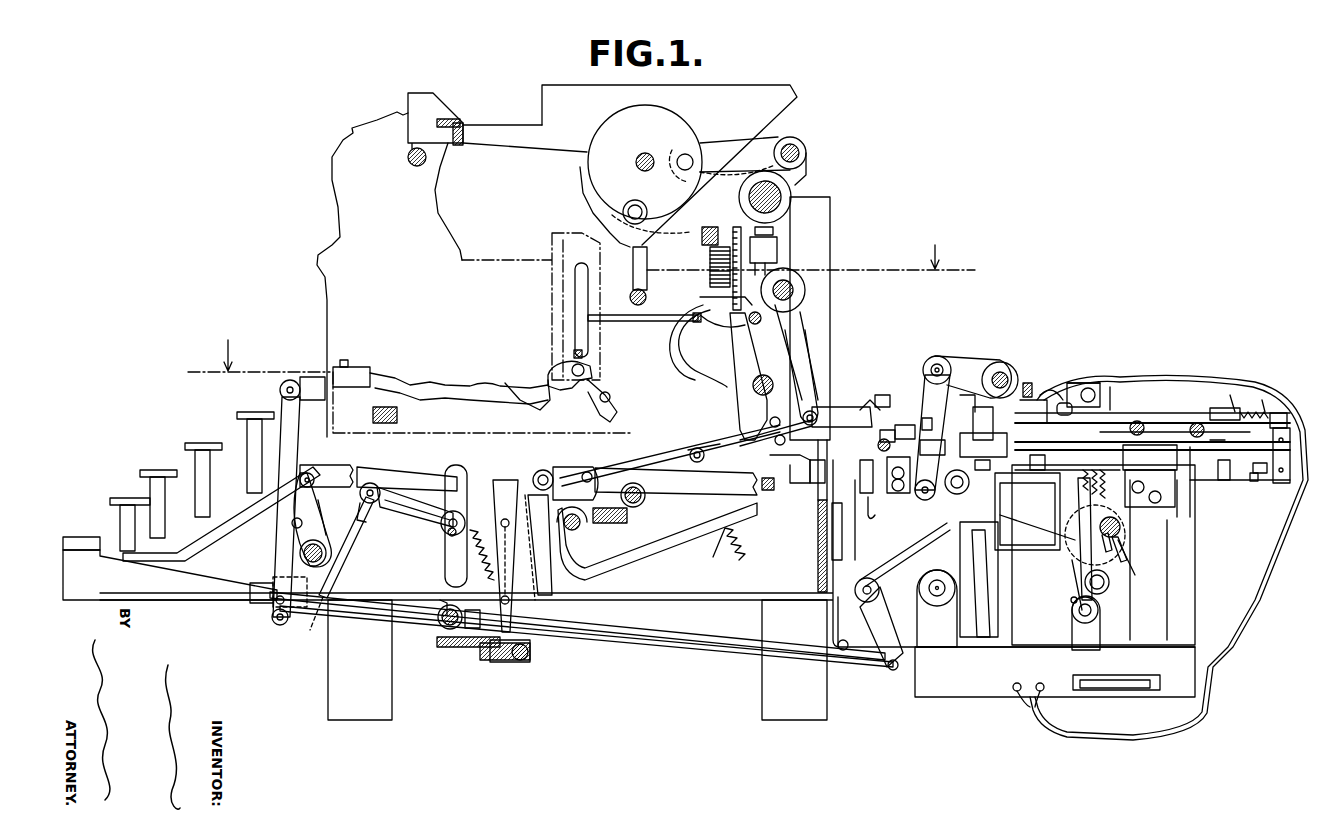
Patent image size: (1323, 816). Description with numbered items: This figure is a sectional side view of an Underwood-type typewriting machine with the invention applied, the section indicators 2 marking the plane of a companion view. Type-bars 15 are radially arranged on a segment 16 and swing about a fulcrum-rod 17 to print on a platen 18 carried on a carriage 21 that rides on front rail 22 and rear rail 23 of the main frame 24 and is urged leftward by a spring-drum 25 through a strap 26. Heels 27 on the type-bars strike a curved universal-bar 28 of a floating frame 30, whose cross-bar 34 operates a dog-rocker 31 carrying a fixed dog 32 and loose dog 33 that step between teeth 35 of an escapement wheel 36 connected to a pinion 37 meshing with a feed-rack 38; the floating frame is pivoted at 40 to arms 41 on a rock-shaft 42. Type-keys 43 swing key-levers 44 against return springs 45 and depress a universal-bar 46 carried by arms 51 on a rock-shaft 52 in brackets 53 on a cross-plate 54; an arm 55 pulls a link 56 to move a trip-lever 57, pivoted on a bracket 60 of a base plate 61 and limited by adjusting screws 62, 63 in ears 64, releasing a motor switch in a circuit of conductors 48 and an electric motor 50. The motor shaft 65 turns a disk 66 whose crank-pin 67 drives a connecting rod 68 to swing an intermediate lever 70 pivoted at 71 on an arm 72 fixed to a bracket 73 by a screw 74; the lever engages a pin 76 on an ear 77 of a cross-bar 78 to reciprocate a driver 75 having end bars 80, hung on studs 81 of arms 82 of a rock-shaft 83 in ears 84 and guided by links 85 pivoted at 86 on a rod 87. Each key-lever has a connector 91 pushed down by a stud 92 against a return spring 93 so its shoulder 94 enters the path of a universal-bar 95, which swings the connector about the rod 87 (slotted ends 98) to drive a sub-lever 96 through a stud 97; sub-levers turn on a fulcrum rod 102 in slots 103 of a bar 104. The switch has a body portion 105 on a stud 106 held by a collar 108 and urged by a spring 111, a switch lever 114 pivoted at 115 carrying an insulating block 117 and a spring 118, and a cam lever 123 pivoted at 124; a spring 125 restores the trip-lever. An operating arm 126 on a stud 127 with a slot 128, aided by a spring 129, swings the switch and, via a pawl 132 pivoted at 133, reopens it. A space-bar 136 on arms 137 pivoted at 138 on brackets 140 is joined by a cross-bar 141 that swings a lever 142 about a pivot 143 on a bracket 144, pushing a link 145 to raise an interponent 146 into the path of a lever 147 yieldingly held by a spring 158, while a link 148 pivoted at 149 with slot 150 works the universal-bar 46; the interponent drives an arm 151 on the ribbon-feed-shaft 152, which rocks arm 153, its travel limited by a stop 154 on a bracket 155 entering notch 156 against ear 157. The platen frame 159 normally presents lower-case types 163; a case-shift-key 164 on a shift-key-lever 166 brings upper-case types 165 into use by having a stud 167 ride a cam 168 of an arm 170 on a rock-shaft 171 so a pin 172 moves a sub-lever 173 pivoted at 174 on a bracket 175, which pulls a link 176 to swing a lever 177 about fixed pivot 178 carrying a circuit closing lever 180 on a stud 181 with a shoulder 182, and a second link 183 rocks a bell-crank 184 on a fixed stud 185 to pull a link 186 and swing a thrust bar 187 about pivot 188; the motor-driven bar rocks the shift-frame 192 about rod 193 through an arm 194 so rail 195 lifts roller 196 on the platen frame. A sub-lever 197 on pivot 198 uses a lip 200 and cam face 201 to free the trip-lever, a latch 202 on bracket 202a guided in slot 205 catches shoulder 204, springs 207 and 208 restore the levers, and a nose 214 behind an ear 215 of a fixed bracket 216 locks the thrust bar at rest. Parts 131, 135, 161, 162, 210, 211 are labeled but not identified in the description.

The section line 2 is at (581, 308).
The type-bars 15 is at (410, 384).
The segment 16 is at (552, 298).
The fulcrum-rod 17 is at (590, 370).
The platen 18 is at (612, 115).
The carriage 21 is at (515, 125).
The front rail 22 is at (408, 160).
The rear rail 23 is at (760, 182).
The main frame 24 is at (325, 186).
The spring-drum 25 is at (778, 253).
The strap 26 is at (773, 231).
The heels 27 is at (545, 372).
The curved universal-bar 28 is at (583, 353).
The floating frame 30 is at (650, 322).
The dog-rocker 31 is at (732, 370).
The fixed dog 32 is at (720, 303).
The loose dog 33 is at (706, 326).
The cross-bar 34 is at (693, 314).
The teeth 35 is at (743, 262).
The escapement wheel 36 is at (737, 227).
The pinion 37 is at (710, 264).
The feed-rack 38 is at (708, 227).
The pivotal connection 40 is at (756, 324).
The arms 41 is at (800, 340).
The rock-shaft 42 is at (752, 388).
The type-keys 43 is at (240, 412).
The key-levers 44 is at (385, 470).
The return springs 45 is at (718, 548).
The universal-bar 46 is at (372, 486).
The conductors 48 is at (1095, 383).
The electric motor 50 is at (1200, 553).
The arms 51 is at (412, 512).
The rock-shaft 52 is at (441, 528).
The brackets 53 is at (454, 537).
The cross-bar or plate 54 is at (480, 652).
The arm 55 is at (445, 492).
The link 56 is at (468, 470).
The trip-lever 57 is at (1150, 476).
The bracket 60 is at (1167, 600).
The base plate 61 is at (1012, 652).
The adjusting screw 62 is at (1192, 482).
The adjusting screw 63 is at (1097, 484).
The ears 64 is at (1178, 560).
The shaft 65 is at (1080, 560).
The disk 66 is at (1109, 552).
The crank-pin 67 is at (1126, 552).
The connecting rod 68 is at (979, 579).
The intermediate lever 70 is at (940, 431).
The pivot 71 is at (937, 356).
The arm 72 is at (962, 365).
The bracket 73 is at (1078, 383).
The screw 74 is at (1000, 362).
The actuating frame or driver 75 is at (860, 520).
The pin 76 is at (898, 493).
The ear 77 is at (939, 446).
The cross-bar 78 is at (896, 447).
The end bars 80 is at (676, 481).
The studs 81 is at (966, 484).
The arms 82 is at (977, 583).
The rock-shaft 83 is at (936, 598).
The ears 84 is at (957, 600).
The links 85 is at (542, 578).
The pivotal connection 86 is at (544, 474).
The rod 87 is at (530, 655).
The connector or interponent 91 is at (494, 498).
The stud 92 is at (505, 528).
The return spring 93 is at (483, 555).
The shoulder 94 is at (533, 476).
The universal-bar or cross-bar 95 is at (531, 500).
The sub-lever 96 is at (590, 458).
The projection or stud 97 is at (594, 480).
The slot 98 is at (518, 662).
The fulcrum rod 102 is at (572, 532).
The slots 103 is at (592, 535).
The bar 104 is at (627, 517).
The body portion 105 is at (1274, 460).
The stud 106 is at (1282, 413).
The collar 108 is at (1257, 402).
The spring 111 is at (1210, 412).
The switch lever 114 is at (1226, 480).
The pivot 115 is at (1221, 429).
The insulating block 117 is at (1068, 404).
The spring 118 is at (1038, 465).
The cam lever 123 is at (1285, 483).
The pivot 124 is at (1083, 480).
The spring 125 is at (1254, 481).
The operating arm 126 is at (1103, 590).
The stud 127 is at (1071, 603).
The slot 128 is at (1138, 559).
The spring 129 is at (1140, 412).
The hub 131 is at (1138, 421).
The pawl 132 is at (1170, 412).
The pivot 133 is at (1047, 412).
The bracket 135 is at (1027, 511).
The space-bar 136 is at (82, 537).
The arms 137 is at (200, 587).
The pivot 138 is at (440, 622).
The brackets 140 is at (437, 642).
The cross-bar 141 is at (298, 590).
The lever 142 is at (663, 640).
The pivot 143 is at (445, 600).
The bracket 144 is at (482, 615).
The link 145 is at (836, 618).
The interponent 146 is at (769, 485).
The lever 147 is at (875, 476).
The link 148 is at (350, 560).
The pivotal connection 149 is at (335, 615).
The slot 150 is at (360, 520).
The arm 151 is at (689, 454).
The ribbon-feed-shaft 152 is at (645, 497).
The arm 153 is at (740, 440).
The stop 154 is at (795, 485).
The bracket 155 is at (774, 438).
The notch 156 is at (818, 483).
The ear 157 is at (783, 451).
The spring 158 is at (903, 425).
The platen frame 159 is at (552, 85).
The link 161 is at (865, 511).
The pin 162 is at (842, 530).
The lower-case types 163 is at (365, 367).
The case-shift-key 164 is at (115, 498).
The upper-case types 165 is at (344, 360).
The shift-key-lever 166 is at (221, 514).
The stud 167 is at (310, 474).
The cam 168 is at (318, 505).
The arm 170 is at (300, 557).
The rock-shaft 171 is at (323, 540).
The pin 172 is at (292, 525).
The sub-lever 173 is at (280, 504).
The pivot 174 is at (280, 390).
The bracket 175 is at (310, 377).
The link 176 is at (283, 624).
The lever 177 is at (1072, 582).
The fixed pivot 178 is at (1086, 623).
The circuit closing lever 180 is at (986, 445).
The stud 181 is at (1049, 389).
The shoulder 182 is at (1195, 423).
The second link 183 is at (858, 663).
The bell-crank 184 is at (886, 620).
The fixed stud 185 is at (878, 595).
The link 186 is at (920, 525).
The thrust bar 187 is at (977, 393).
The pivot 188 is at (815, 412).
The shift-frame 192 is at (678, 365).
The rod 193 is at (795, 288).
The arm 194 is at (805, 316).
The rail 195 is at (630, 298).
The roller 196 is at (634, 222).
The sub-lever 197 is at (861, 399).
The pivot 198 is at (880, 395).
The lip 200 is at (842, 416).
The cam face 201 is at (890, 430).
The latch 202 is at (936, 411).
The bracket 202a is at (1038, 379).
The shoulder 204 is at (1000, 423).
The slot 205 is at (930, 500).
The spring 207 is at (1120, 525).
The second spring 208 is at (1037, 531).
The spring 210 is at (1078, 484).
The block 211 is at (985, 465).
The nose 214 is at (1262, 400).
The ear 215 is at (1227, 402).
The fixed bracket 216 is at (1230, 395).